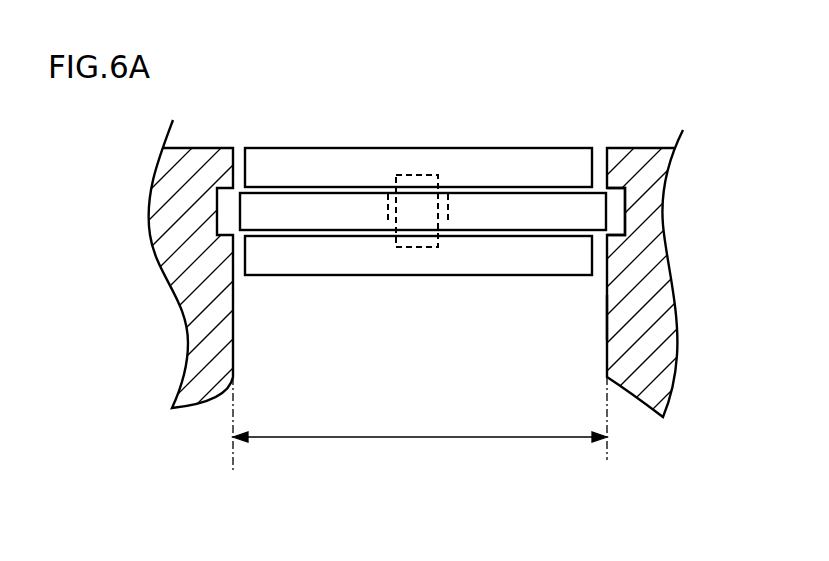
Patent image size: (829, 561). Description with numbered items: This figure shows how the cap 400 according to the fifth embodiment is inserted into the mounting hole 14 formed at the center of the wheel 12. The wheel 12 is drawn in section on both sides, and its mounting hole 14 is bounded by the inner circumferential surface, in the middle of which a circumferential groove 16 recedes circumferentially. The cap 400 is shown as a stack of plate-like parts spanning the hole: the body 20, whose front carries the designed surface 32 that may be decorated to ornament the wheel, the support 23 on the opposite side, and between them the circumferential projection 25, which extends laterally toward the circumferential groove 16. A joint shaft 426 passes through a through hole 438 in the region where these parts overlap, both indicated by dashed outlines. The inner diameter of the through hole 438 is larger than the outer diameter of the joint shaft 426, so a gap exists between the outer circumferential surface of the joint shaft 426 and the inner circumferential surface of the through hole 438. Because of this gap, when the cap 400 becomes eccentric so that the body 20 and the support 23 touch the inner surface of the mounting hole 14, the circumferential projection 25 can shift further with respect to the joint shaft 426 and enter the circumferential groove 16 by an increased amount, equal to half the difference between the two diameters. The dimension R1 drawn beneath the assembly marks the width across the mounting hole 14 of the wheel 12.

The cap 400 is at (553, 124).
The wheel 12 is at (655, 258).
The mounting hole 14 is at (608, 305).
The circumferential groove 16 is at (627, 208).
The body 20 is at (424, 183).
The support 23 is at (517, 252).
The circumferential projection 25 is at (357, 207).
The designed surface 32 is at (303, 148).
The joint shaft 426 is at (418, 175).
The through hole 438 is at (448, 213).
The width dimension R1 is at (420, 423).